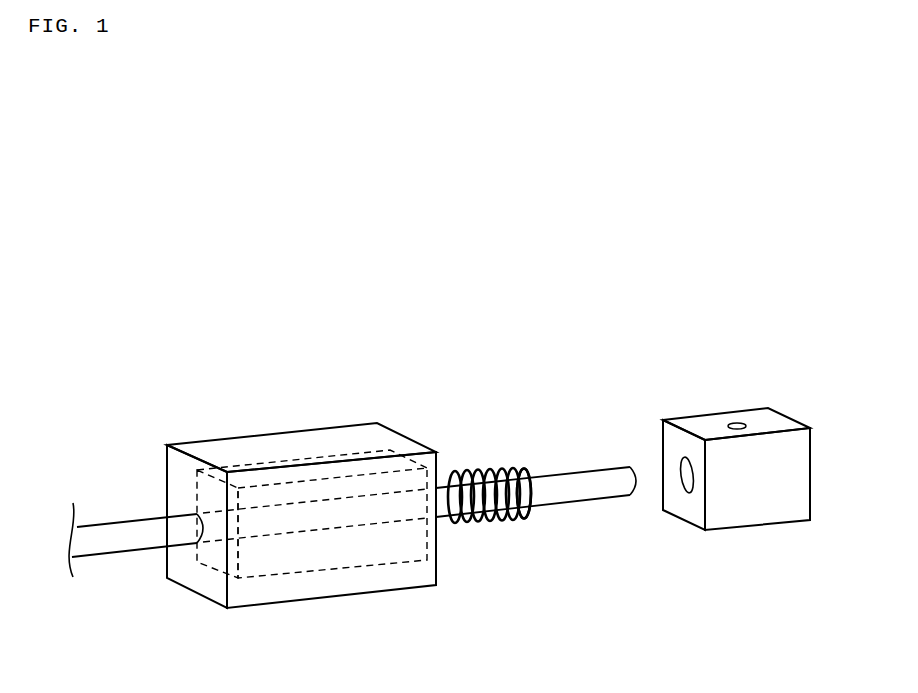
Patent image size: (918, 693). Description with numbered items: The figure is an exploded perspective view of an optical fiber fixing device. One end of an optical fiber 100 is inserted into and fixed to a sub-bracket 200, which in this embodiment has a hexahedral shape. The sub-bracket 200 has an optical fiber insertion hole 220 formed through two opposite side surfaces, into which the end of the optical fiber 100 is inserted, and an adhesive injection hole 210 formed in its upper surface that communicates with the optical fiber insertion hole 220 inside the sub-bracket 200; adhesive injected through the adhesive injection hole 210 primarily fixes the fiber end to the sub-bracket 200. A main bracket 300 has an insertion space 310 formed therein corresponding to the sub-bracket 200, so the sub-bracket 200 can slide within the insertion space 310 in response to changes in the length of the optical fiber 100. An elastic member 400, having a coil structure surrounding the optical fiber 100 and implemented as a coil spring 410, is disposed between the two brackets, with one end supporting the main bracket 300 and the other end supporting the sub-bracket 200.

The optical fiber 100 is at (123, 528).
The sub-bracket 200 is at (685, 420).
The adhesive injection hole 210 is at (737, 423).
The optical fiber insertion hole 220 is at (683, 485).
The main bracket 300 is at (265, 443).
The insertion space 310 is at (355, 545).
The elastic member 400 is at (495, 458).
The coil spring 410 is at (527, 520).